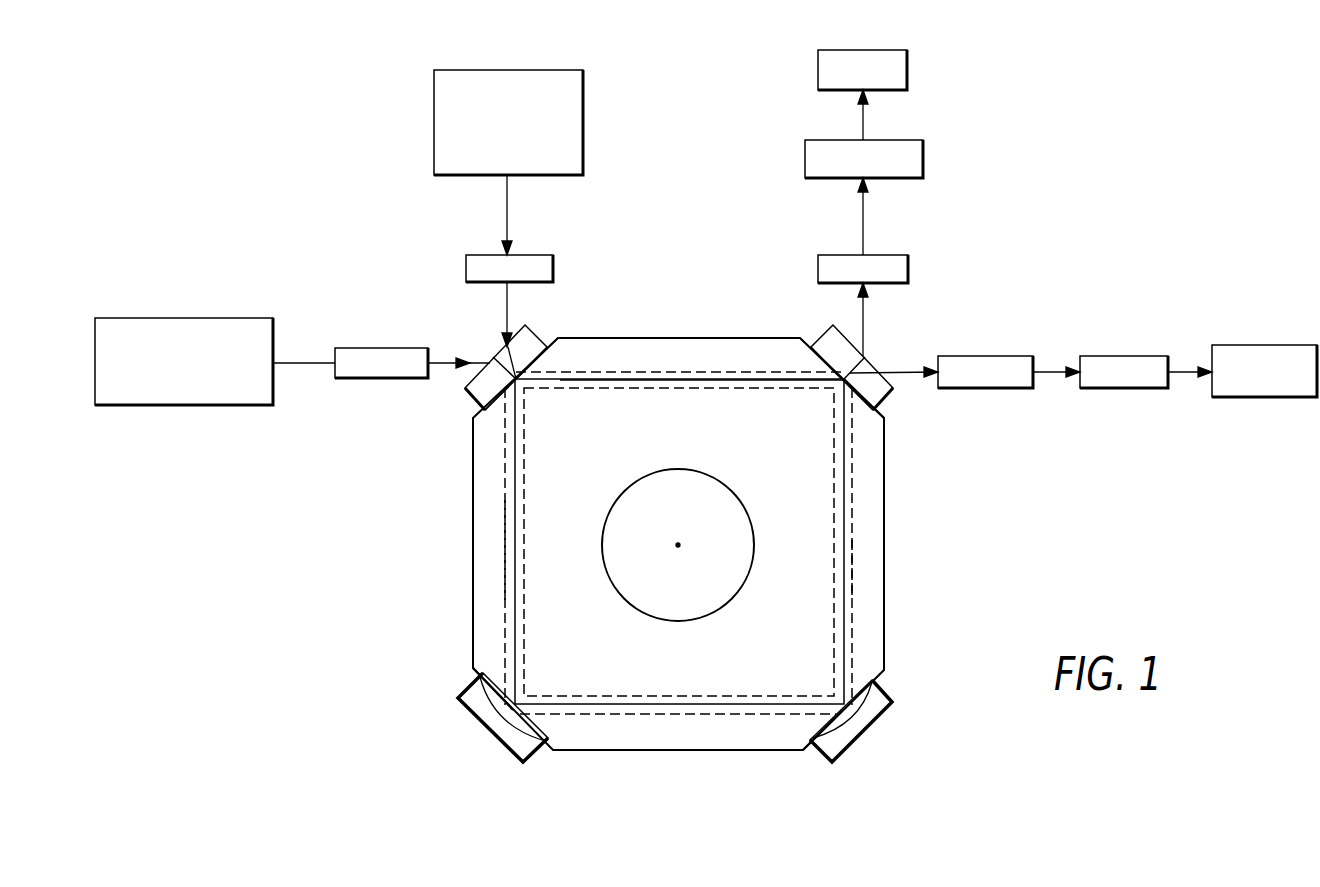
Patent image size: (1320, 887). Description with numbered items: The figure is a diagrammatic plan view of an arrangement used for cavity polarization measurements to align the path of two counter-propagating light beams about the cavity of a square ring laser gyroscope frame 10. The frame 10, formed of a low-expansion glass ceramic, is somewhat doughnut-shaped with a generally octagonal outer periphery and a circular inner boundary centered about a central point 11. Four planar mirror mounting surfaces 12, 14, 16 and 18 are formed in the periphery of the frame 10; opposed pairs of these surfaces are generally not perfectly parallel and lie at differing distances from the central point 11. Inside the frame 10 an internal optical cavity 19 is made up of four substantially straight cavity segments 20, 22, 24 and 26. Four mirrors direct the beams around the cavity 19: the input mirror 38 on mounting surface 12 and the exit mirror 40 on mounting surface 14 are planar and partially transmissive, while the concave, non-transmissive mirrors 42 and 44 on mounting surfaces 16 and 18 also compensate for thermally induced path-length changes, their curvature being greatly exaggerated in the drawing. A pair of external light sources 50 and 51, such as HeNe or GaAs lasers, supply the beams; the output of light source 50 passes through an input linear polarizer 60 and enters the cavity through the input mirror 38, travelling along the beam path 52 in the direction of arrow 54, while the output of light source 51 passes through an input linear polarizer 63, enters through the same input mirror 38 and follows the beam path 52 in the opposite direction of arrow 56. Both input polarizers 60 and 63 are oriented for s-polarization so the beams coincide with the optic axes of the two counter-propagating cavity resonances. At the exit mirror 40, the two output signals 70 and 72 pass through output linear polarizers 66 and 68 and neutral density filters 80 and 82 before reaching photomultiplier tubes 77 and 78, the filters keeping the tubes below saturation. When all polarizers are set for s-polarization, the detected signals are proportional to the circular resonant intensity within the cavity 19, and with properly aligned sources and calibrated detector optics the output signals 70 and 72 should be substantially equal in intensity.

The gyroscope frame 10 is at (742, 250).
The central point 11 is at (678, 545).
The mirror mounting surface 12 is at (548, 336).
The mirror mounting surface 14 is at (886, 417).
The mirror mounting surface 16 is at (813, 752).
The mirror mounting surface 18 is at (472, 678).
The internal optical cavity 19 is at (858, 508).
The cavity segment 20 is at (681, 372).
The cavity segment 22 is at (855, 563).
The cavity segment 24 is at (735, 715).
The cavity segment 26 is at (505, 545).
The input mirror 38 is at (525, 328).
The exit mirror 40 is at (835, 325).
The concave mirror 42 is at (876, 722).
The concave mirror 44 is at (483, 727).
The light source 50 is at (187, 318).
The light source 51 is at (545, 70).
The beam path 52 is at (765, 375).
The arrow 54 is at (650, 380).
The arrow 56 is at (718, 382).
The input linear polarizer 60 is at (370, 348).
The input linear polarizer 63 is at (553, 266).
The output linear polarizer 66 is at (980, 356).
The output linear polarizer 68 is at (908, 265).
The output signal 70 is at (912, 370).
The output signal 72 is at (868, 322).
The photomultiplier tube 77 is at (1258, 345).
The photomultiplier tube 78 is at (873, 50).
The neutral density filter 80 is at (1128, 356).
The neutral density filter 82 is at (923, 159).